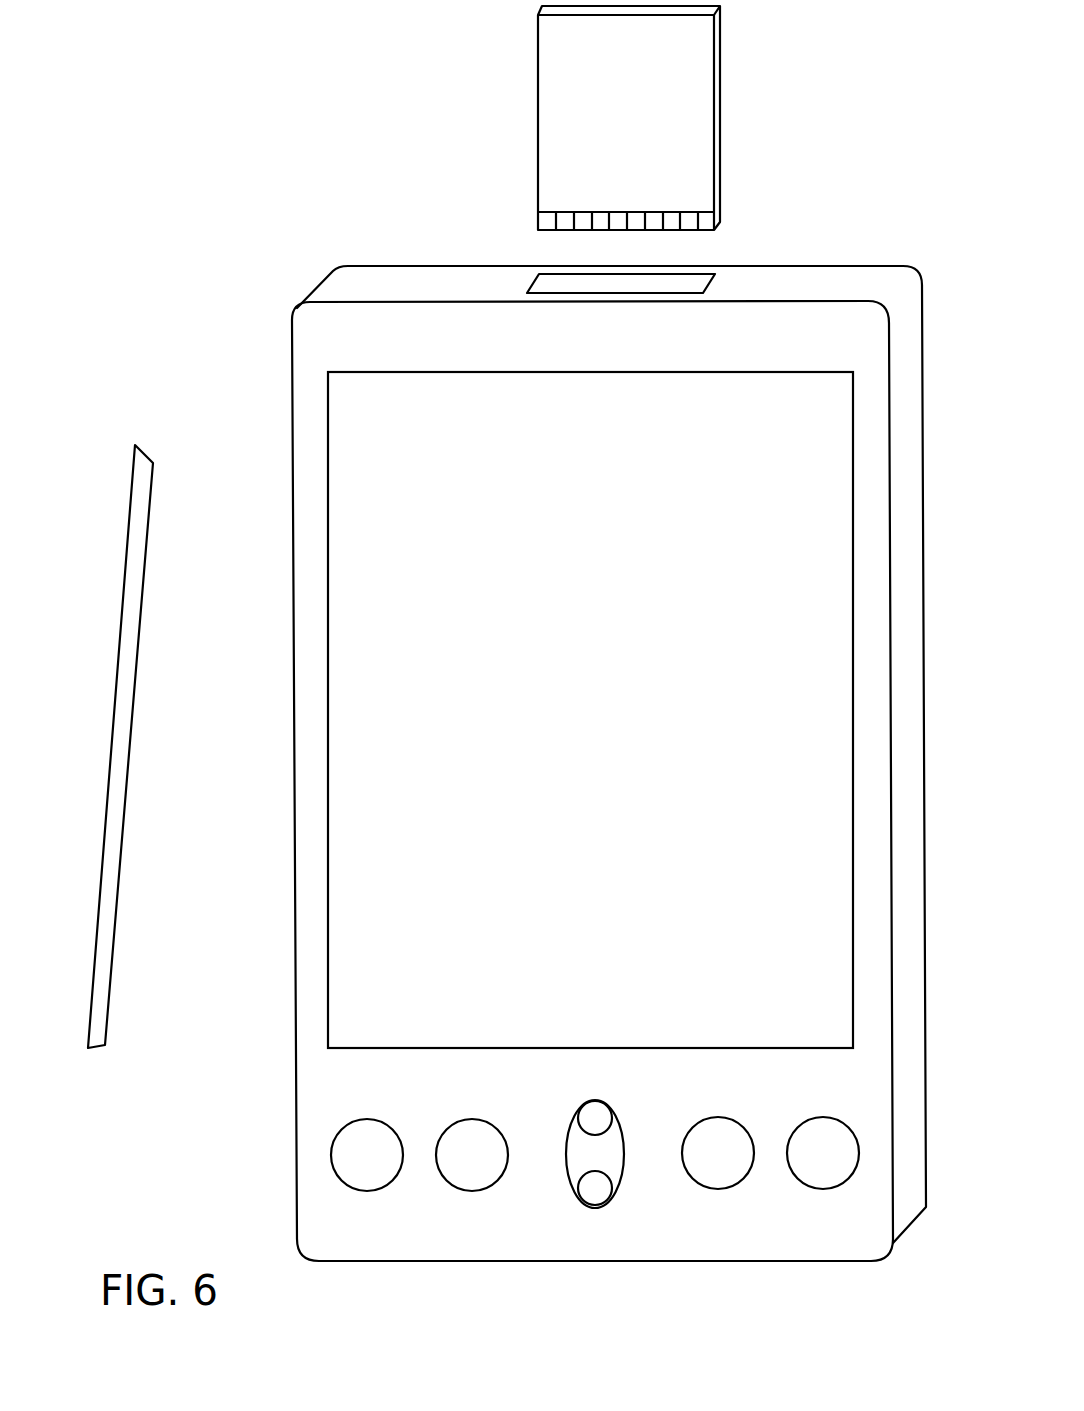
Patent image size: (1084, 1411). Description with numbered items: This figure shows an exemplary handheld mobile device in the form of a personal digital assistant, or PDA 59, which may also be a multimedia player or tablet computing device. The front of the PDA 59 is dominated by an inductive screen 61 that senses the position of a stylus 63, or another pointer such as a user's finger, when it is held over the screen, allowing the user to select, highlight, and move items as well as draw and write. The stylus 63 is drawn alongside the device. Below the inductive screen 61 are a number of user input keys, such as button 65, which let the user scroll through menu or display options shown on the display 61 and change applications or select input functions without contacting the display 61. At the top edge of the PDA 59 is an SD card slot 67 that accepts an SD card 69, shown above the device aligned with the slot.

The personal digital assistant (PDA) 59 is at (252, 514).
The inductive screen 61 is at (525, 703).
The stylus 63 is at (103, 1048).
The button 65 is at (348, 1145).
The SD card slot 67 is at (628, 285).
The SD card 69 is at (538, 124).